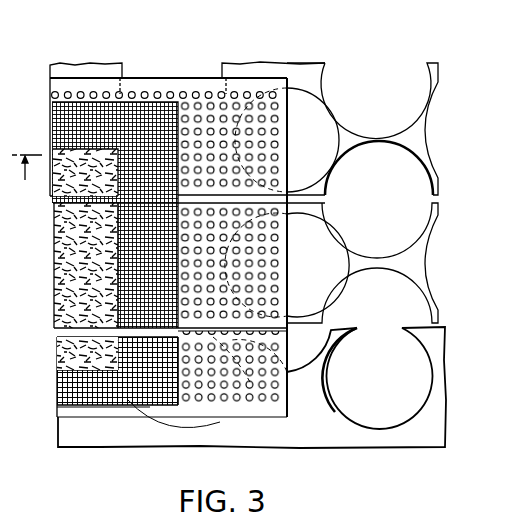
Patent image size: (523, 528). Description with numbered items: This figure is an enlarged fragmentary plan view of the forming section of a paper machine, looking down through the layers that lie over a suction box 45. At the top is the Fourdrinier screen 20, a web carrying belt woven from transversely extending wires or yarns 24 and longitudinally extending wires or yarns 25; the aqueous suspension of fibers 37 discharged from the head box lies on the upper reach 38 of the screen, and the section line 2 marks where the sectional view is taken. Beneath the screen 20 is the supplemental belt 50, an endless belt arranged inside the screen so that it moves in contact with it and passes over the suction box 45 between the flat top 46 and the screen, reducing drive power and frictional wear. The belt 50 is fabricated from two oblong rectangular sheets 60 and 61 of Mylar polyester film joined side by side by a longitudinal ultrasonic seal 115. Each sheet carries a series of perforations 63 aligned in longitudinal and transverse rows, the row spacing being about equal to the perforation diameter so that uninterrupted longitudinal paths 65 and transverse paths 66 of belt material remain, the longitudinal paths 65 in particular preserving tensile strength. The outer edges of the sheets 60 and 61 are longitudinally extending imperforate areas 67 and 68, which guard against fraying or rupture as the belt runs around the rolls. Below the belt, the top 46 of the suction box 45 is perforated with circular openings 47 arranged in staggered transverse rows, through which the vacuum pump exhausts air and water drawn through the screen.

The supplemental belt 50 is at (262, 80).
The imperforate area 67 is at (58, 92).
The perforations 63 is at (93, 91).
The Fourdrinier screen 20 is at (60, 128).
The transversely extending wires or yarns 24 is at (149, 118).
The transverse paths 66 is at (209, 91).
The section line 2- 2 is at (63, 172).
The fibers 37 is at (64, 278).
The longitudinal ultrasonic seal 115 is at (285, 232).
The upper reach 38 is at (68, 375).
The longitudinally extending wires or yarns 25 is at (88, 396).
The imperforate area 68 is at (63, 413).
The longitudinal paths 65 is at (277, 383).
The sheet 61 is at (288, 410).
The sheet 60 is at (287, 135).
The top 46 is at (375, 237).
The circular openings 47 is at (415, 170).
The suction box 45 is at (323, 448).